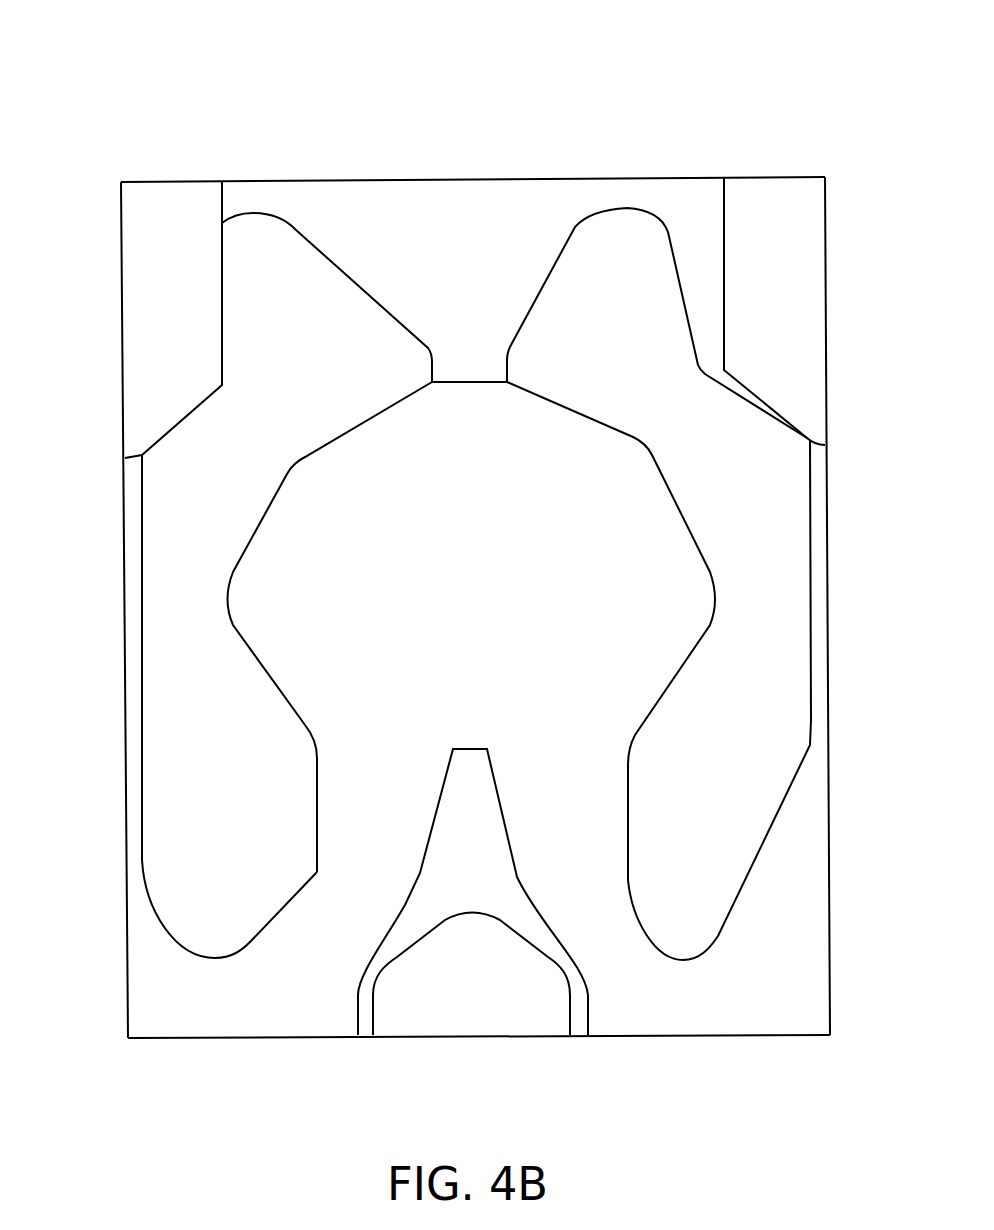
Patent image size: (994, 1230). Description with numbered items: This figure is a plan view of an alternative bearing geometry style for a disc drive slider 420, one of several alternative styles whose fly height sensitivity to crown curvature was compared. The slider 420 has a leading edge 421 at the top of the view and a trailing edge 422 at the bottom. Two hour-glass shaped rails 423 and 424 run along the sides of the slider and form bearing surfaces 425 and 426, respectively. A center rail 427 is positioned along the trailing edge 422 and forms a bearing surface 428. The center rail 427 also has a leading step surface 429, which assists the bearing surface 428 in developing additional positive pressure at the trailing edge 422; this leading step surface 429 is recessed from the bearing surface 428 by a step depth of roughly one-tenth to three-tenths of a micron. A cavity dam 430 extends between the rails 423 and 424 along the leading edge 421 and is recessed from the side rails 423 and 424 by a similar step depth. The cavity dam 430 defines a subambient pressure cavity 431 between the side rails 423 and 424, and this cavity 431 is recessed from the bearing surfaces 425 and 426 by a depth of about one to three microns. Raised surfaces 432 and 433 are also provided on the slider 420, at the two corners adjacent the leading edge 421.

The slider 420 is at (298, 97).
The leading edge 421 is at (617, 177).
The trailing edge 422 is at (760, 1036).
The hour-glass shaped rail 423 is at (180, 607).
The hour-glass shaped rail 424 is at (757, 610).
The bearing surface 425 is at (205, 802).
The bearing surface 426 is at (744, 743).
The center rail 427 is at (453, 837).
The bearing surface 428 is at (494, 978).
The leading step surface 429 is at (498, 882).
The cavity dam 430 is at (483, 242).
The subambient pressure cavity 431 is at (474, 474).
The raised surface 432 is at (158, 254).
The raised surface 433 is at (772, 277).